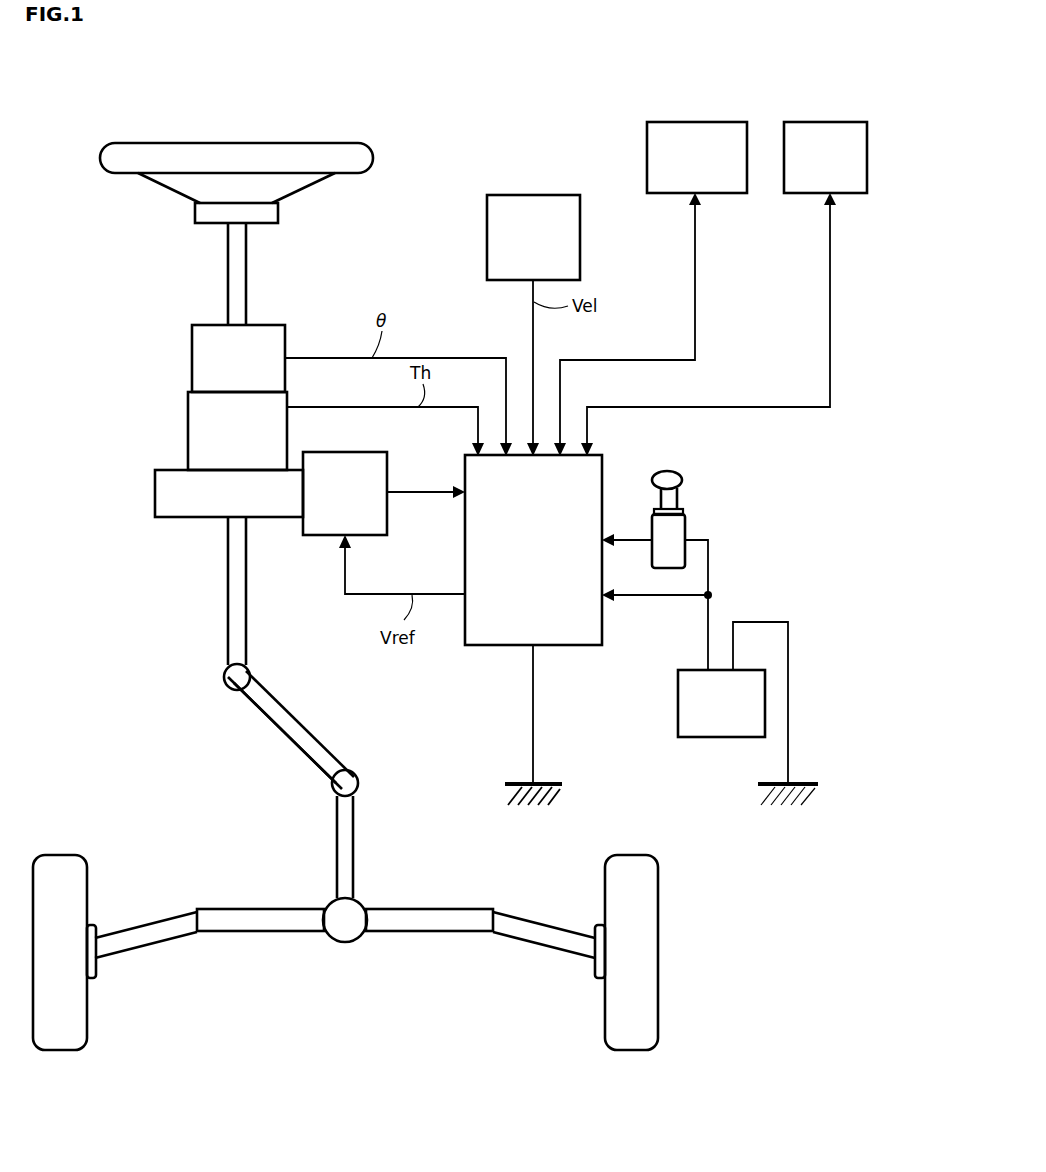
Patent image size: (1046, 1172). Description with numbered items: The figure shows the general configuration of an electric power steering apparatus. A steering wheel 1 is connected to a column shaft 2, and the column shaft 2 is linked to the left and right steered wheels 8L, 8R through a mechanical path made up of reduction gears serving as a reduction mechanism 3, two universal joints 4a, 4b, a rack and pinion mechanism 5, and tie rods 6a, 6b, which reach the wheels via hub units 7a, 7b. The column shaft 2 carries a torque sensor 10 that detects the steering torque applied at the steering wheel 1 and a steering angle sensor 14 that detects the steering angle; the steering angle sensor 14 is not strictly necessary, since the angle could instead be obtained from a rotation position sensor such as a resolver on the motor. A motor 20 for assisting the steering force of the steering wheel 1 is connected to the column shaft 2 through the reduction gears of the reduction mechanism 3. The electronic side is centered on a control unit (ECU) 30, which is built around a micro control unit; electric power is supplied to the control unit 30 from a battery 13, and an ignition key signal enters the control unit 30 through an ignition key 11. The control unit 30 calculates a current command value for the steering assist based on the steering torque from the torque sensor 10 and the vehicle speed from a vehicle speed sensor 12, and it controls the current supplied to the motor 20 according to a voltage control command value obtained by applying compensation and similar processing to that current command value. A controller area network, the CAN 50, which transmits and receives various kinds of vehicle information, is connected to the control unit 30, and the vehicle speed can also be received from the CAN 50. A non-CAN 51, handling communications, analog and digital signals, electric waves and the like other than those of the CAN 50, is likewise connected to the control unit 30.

The steering wheel 1 is at (373, 151).
The column shaft 2 is at (227, 268).
The reduction mechanism 3 is at (155, 501).
The universal joint 4a is at (224, 682).
The universal joint 4b is at (332, 789).
The rack and pinion mechanism 5 is at (362, 898).
The tie rod 6a is at (128, 925).
The tie rod 6b is at (523, 915).
The hub unit 7a is at (96, 972).
The hub unit 7b is at (597, 973).
The steered wheel 8L is at (87, 1035).
The steered wheel 8R is at (606, 1036).
The torque sensor 10 is at (188, 422).
The ignition key 11 is at (682, 477).
The vehicle speed sensor 12 is at (580, 208).
The battery 13 is at (678, 695).
The steering angle sensor 14 is at (192, 352).
The motor 20 is at (387, 457).
The control unit (ECU) 30 is at (603, 456).
The controller area network (CAN) 50 is at (842, 122).
The non-CAN 51 is at (715, 122).